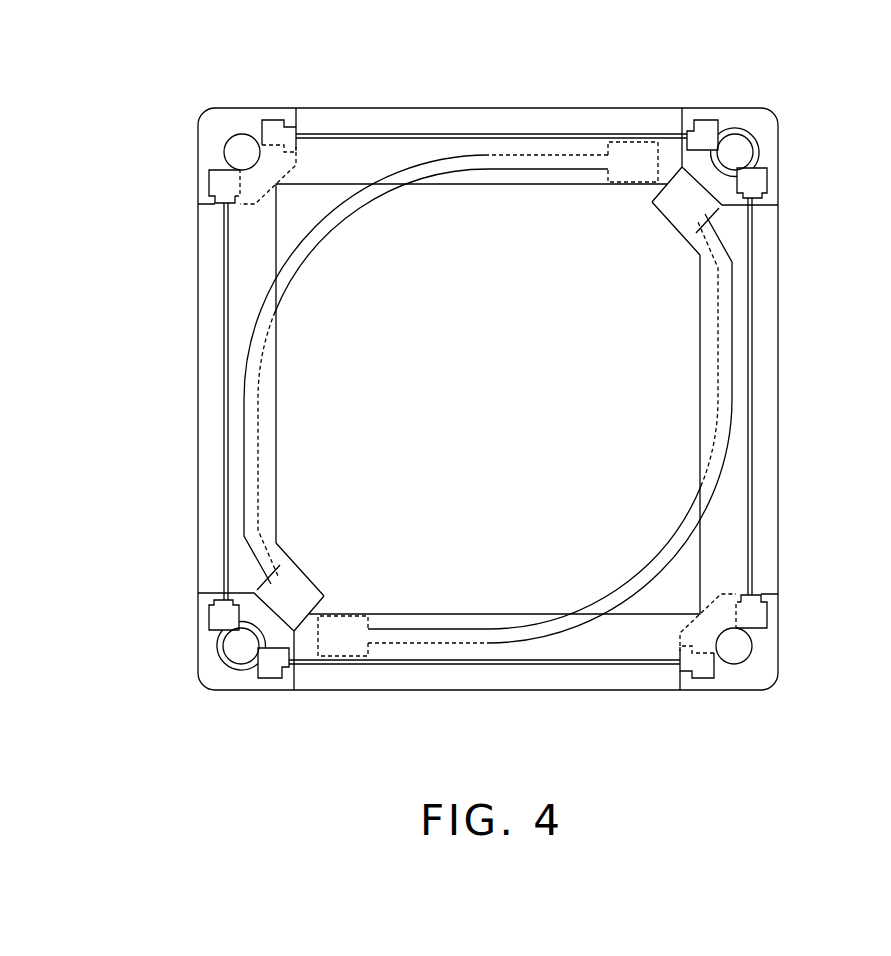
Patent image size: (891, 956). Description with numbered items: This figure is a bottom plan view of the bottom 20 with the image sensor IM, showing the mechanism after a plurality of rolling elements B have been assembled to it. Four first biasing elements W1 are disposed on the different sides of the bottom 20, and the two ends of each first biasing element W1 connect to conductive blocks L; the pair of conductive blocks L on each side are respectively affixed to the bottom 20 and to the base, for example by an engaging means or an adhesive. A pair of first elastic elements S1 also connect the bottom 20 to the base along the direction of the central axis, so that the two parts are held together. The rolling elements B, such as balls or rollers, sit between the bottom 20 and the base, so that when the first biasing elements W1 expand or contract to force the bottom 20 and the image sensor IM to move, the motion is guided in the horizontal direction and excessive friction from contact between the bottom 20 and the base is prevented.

The bottom 20 is at (791, 264).
The image sensor IM is at (330, 472).
The first elastic element S1 is at (252, 328).
The rolling element B is at (240, 152).
The conductive block L is at (276, 118).
The first biasing element W1 is at (347, 132).